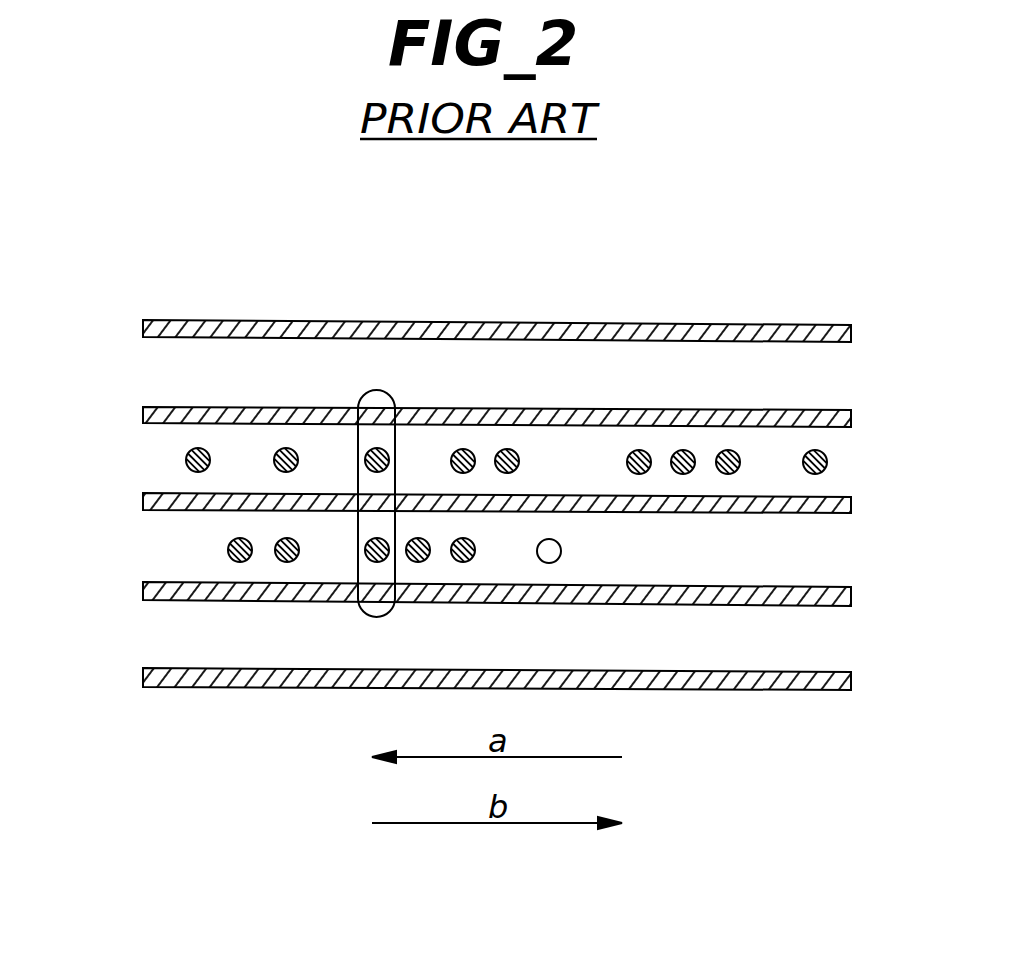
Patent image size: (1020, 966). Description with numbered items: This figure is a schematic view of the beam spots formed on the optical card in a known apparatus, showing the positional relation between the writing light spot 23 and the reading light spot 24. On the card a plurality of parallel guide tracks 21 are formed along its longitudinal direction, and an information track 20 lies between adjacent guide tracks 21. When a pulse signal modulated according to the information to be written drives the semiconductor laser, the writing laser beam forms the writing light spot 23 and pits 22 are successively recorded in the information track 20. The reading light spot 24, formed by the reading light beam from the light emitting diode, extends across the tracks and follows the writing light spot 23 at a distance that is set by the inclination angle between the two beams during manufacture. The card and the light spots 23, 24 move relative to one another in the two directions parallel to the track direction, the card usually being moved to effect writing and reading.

The information track 20 is at (177, 547).
The guide track 21 is at (143, 588).
The pit 22 is at (828, 462).
The writing light spot 23 is at (562, 551).
The reading light spot 24 is at (384, 388).